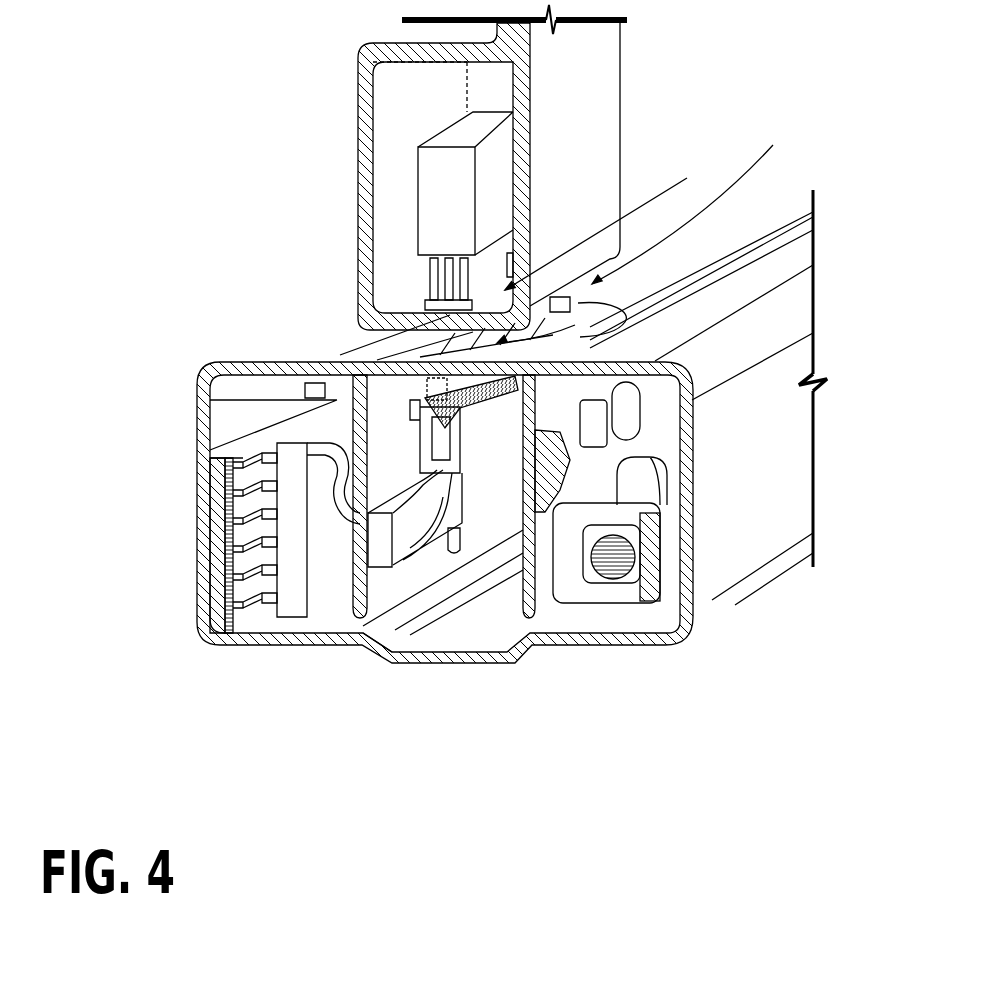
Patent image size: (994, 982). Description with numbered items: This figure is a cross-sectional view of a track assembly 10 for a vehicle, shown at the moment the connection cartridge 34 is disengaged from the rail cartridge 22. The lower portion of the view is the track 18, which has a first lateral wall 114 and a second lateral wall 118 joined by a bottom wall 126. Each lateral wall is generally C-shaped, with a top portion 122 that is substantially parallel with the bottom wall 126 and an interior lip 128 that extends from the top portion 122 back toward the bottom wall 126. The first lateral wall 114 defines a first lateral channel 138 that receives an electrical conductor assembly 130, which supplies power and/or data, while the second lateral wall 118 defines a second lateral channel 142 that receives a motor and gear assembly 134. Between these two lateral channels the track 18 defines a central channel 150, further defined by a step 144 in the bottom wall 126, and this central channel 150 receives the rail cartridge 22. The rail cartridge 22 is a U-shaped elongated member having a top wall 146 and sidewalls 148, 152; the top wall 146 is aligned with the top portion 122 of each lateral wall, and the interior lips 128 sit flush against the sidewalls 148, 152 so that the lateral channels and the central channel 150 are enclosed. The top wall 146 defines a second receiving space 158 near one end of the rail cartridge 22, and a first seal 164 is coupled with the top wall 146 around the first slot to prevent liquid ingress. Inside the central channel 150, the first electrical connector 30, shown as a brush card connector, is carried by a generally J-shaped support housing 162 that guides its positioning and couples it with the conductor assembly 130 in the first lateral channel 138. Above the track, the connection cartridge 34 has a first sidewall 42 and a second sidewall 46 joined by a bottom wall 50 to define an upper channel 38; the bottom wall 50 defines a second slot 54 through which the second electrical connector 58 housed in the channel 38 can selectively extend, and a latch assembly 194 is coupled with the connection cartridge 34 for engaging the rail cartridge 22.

The track assembly 10 is at (755, 65).
The track 18 is at (777, 435).
The rail cartridge 22 is at (818, 223).
The first electrical connector 30 is at (690, 350).
The connection cartridge 34 is at (583, 97).
The channel 38 is at (498, 97).
The first sidewall 42 is at (358, 167).
The second sidewall 46 is at (580, 173).
The bottom wall 50 is at (432, 293).
The second slot 54 is at (610, 226).
The second electrical connector 58 is at (435, 167).
The first lateral wall 114 is at (197, 483).
The second lateral wall 118 is at (753, 512).
The top portion 122 is at (730, 300).
The bottom wall 126 is at (318, 645).
The interior lip 128 is at (305, 390).
The electrical conductor assembly 130 is at (232, 566).
The motor and gear assembly 134 is at (640, 563).
The first lateral channel 138 is at (229, 428).
The second lateral channel 142 is at (655, 627).
The step 144 is at (408, 662).
The top wall 146 is at (463, 320).
The sidewall 148 is at (310, 575).
The central channel 150 is at (473, 616).
The sidewall 152 is at (575, 560).
The second receiving space 158 is at (578, 307).
The support housing 162 is at (373, 547).
The first seal 164 is at (440, 310).
The latch assembly 194 is at (702, 200).